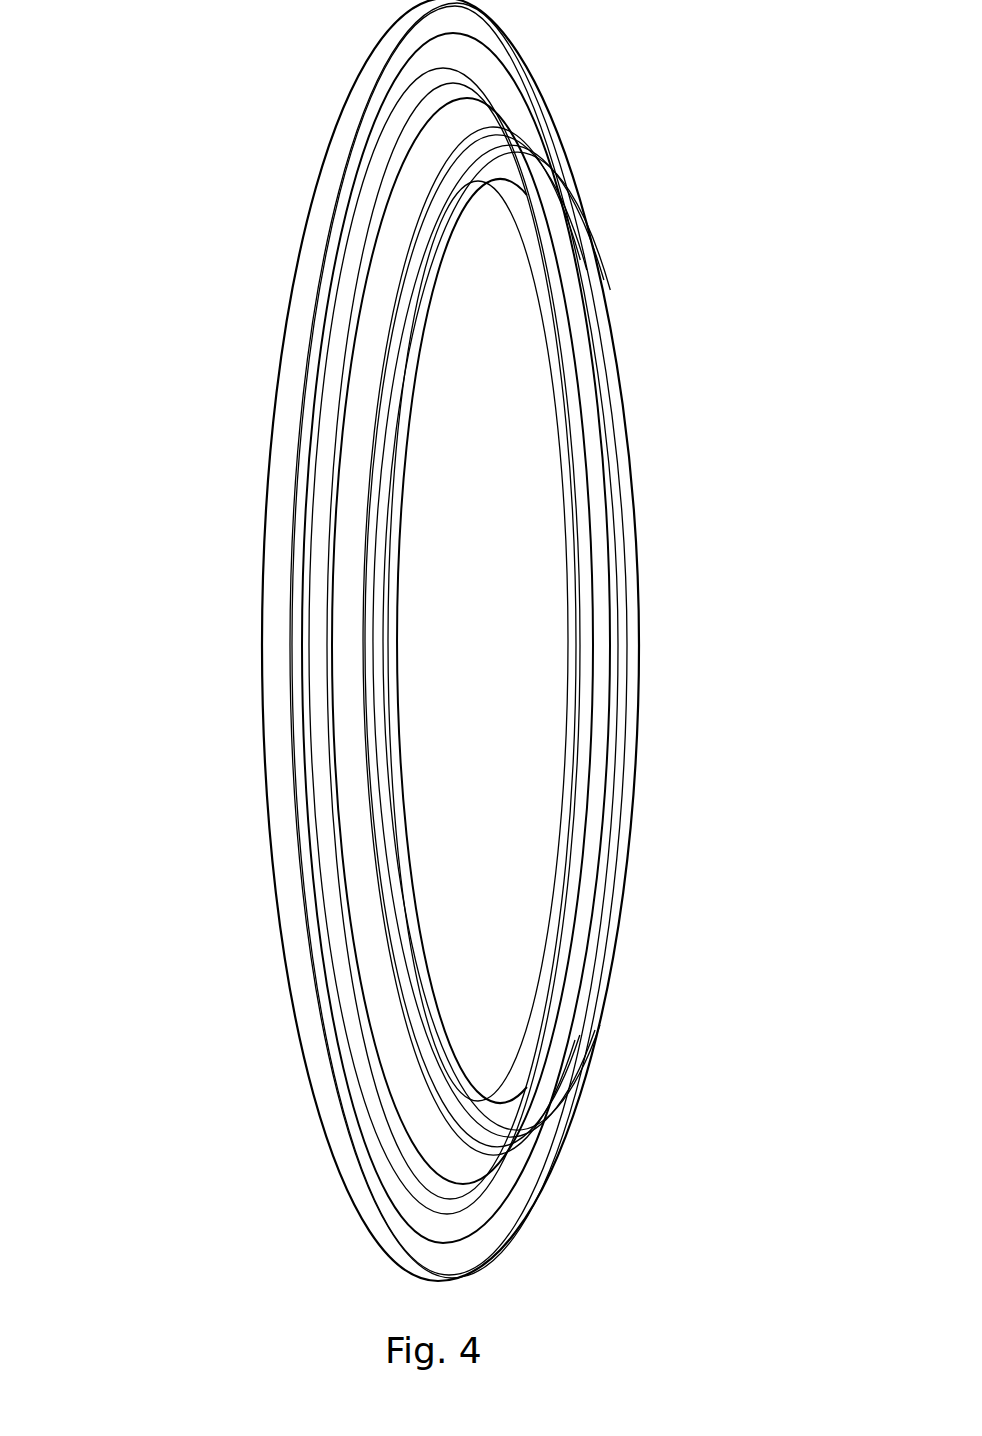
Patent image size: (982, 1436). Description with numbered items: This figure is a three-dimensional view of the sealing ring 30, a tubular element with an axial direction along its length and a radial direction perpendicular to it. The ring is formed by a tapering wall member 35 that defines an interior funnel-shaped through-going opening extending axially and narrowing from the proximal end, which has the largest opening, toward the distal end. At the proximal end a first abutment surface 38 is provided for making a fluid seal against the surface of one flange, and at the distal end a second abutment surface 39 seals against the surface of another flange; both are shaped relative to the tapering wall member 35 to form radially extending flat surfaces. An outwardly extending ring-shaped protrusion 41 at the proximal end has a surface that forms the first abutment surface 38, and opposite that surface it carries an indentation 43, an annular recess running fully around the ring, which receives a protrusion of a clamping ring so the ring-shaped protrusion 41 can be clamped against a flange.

The seal ring 30 is at (439, 665).
The tapering wall member 35 is at (405, 187).
The first abutment surface 38 is at (243, 660).
The second abutment surface 39 is at (545, 1100).
The outwardly extending ring-shaped protrusion 41 is at (528, 1238).
The indentation 43 is at (490, 88).